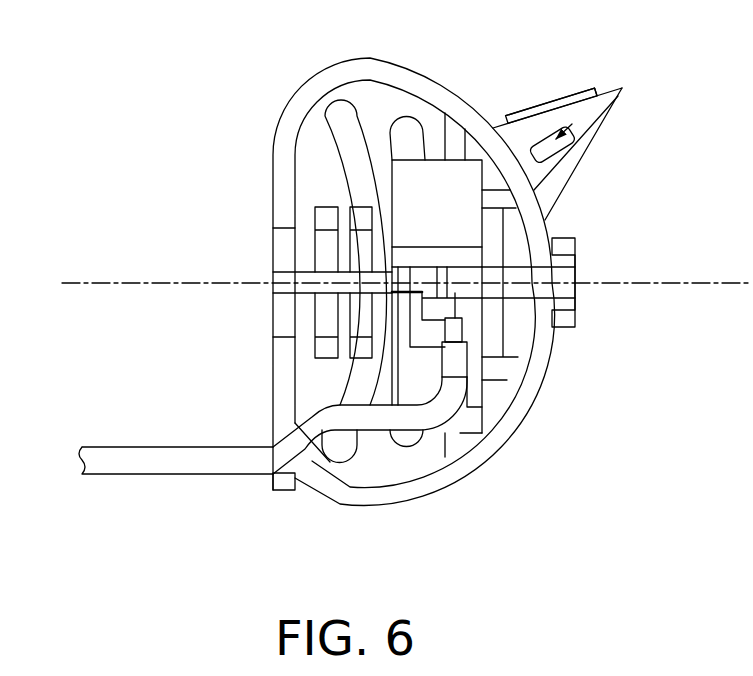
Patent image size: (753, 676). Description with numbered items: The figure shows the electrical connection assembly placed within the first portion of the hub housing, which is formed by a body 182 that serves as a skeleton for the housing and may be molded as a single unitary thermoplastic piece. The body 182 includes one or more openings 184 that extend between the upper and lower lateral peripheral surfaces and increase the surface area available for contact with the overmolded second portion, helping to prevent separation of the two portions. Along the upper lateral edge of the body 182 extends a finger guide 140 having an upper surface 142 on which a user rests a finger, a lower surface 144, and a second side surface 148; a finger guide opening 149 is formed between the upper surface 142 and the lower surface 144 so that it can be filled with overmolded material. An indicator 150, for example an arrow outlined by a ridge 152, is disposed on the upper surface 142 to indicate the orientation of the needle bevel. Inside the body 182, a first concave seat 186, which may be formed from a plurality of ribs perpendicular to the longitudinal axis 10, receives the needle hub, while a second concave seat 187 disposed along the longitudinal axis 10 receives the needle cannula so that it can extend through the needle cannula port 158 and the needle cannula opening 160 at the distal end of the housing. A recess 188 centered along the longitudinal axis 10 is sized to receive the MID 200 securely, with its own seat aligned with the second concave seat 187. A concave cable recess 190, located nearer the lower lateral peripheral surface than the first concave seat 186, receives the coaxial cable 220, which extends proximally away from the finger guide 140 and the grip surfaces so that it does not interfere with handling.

The longitudinal axis 10 is at (94, 282).
The finger guide 140 is at (630, 90).
The upper surface 142 is at (537, 123).
The lower surface 144 is at (597, 135).
The second side surface 148 is at (528, 160).
The finger guide opening 149 is at (613, 108).
The indicator 150 is at (567, 90).
The ridge 152 is at (600, 84).
The needle cannula port 158 is at (260, 279).
The needle cannula opening 160 is at (585, 300).
The body 182 is at (375, 480).
The openings 184 is at (403, 128).
The first concave seat 186 is at (306, 245).
The second concave seat 187 is at (562, 280).
The recess 188 is at (345, 378).
The concave cable recess 190 is at (269, 479).
The MID 200 is at (437, 184).
The coaxial cable 220 is at (166, 481).